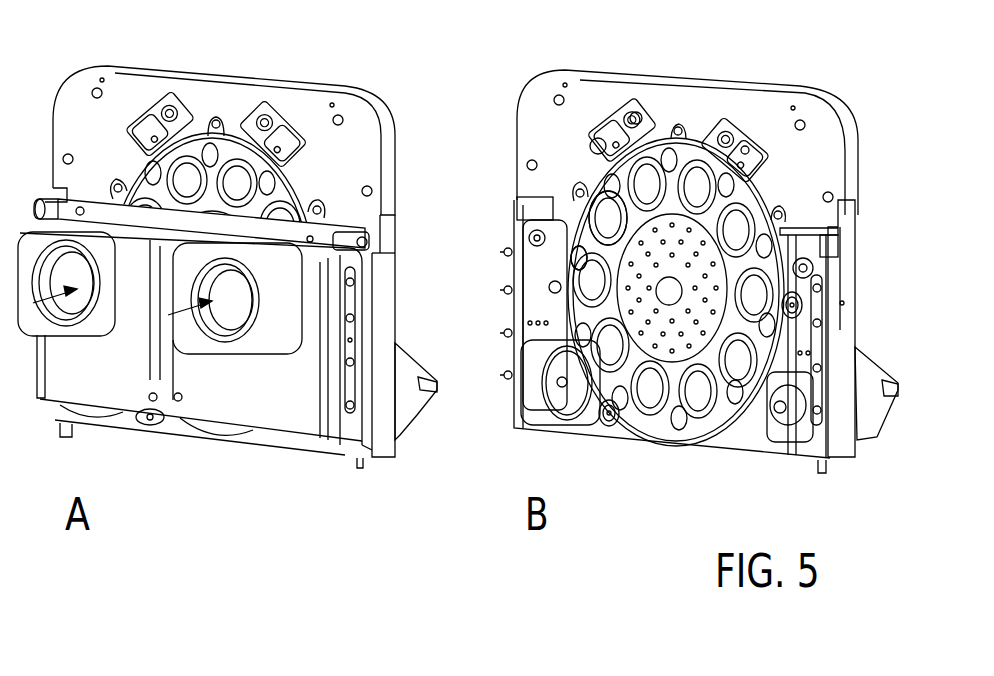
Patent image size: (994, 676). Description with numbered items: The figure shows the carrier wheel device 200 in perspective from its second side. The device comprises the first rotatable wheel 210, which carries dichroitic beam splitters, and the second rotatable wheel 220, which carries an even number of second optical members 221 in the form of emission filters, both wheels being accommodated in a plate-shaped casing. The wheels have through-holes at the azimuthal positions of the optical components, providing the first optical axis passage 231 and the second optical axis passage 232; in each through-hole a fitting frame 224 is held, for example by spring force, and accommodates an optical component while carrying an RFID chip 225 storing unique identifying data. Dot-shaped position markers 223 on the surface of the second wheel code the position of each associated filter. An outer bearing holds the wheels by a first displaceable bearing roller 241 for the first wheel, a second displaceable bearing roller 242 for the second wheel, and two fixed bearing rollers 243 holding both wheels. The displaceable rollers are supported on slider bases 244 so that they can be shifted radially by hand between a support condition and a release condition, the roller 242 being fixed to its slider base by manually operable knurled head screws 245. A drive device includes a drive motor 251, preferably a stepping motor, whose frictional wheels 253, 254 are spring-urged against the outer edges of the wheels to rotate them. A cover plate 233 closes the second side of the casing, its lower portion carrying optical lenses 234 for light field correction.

In FIG. 5A, the carrier wheel device 200 is at (424, 71).
In FIG. 5B, the carrier wheel device 200 is at (522, 71).
In FIG. 5B, the first rotatable wheel 210 is at (760, 207).
In FIG. 5A, the second rotatable wheel 220 is at (283, 193).
In FIG. 5B, the second rotatable wheel 220 is at (605, 170).
In FIG. 5B, the second optical members 221 is at (770, 207).
In FIG. 5B, the position markers 223 is at (677, 330).
In FIG. 5B, the fitting frame 224 is at (595, 207).
In FIG. 5B, the RFID chip 225 is at (585, 214).
In FIG. 5A, the first optical axis passage 231 is at (173, 340).
In FIG. 5A, the second optical axis passage 232 is at (36, 322).
In FIG. 5A, the cover plate 233 is at (270, 407).
In FIG. 5A, the optical lenses 234 is at (85, 315).
In FIG. 5B, the first displaceable bearing roller 241 is at (760, 147).
In FIG. 5B, the second displaceable bearing roller 242 is at (612, 128).
In FIG. 5B, the fixed bearing rollers 243 is at (805, 307).
In FIG. 5B, the slider base 244 is at (637, 100).
In FIG. 5B, the knurled head screws 245 is at (650, 120).
In FIG. 5A, the drive motor 251 is at (400, 417).
In FIG. 5B, the drive motor 251 is at (860, 423).
In FIG. 5B, the frictional wheel 253 is at (793, 427).
In FIG. 5B, the frictional wheel 254 is at (552, 380).